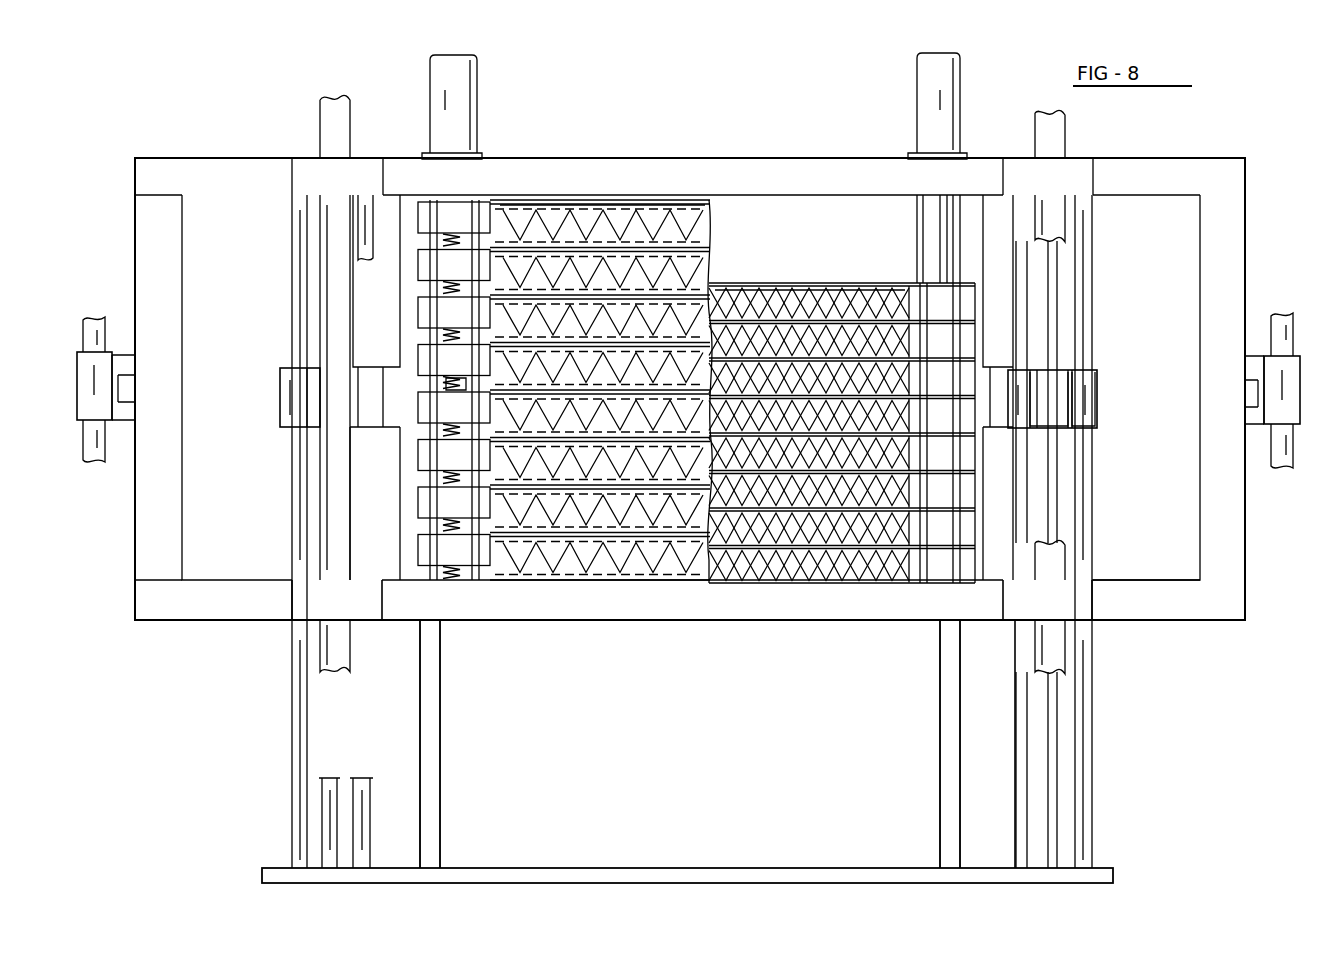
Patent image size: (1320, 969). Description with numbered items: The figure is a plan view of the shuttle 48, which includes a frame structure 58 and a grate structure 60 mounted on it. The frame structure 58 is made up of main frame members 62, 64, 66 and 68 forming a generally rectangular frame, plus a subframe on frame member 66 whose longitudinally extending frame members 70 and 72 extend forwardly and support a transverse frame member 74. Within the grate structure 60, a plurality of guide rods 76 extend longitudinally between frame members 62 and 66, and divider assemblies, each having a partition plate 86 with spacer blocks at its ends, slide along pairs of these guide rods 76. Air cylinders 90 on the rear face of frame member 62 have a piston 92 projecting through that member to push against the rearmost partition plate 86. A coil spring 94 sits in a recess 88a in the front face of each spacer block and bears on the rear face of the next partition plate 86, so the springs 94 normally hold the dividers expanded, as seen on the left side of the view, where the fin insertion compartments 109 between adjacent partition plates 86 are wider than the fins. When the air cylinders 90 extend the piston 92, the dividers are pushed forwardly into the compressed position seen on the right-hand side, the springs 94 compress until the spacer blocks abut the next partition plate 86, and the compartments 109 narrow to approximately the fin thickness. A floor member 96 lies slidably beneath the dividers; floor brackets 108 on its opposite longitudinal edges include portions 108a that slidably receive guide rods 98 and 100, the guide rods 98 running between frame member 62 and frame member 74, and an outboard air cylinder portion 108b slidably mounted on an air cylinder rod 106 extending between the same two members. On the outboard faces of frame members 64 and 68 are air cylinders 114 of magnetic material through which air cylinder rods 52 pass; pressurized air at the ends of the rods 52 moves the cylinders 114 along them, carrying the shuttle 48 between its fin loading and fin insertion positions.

The shuttle 48 is at (1258, 188).
The air cylinder rods 52 is at (112, 442).
The frame structure 58 is at (238, 158).
The grate structure 60 is at (690, 222).
The main frame member 62 is at (621, 158).
The main frame member 64 is at (137, 238).
The main frame member 66 is at (690, 622).
The main frame member 68 is at (1247, 590).
The longitudinally extending frame member 70 is at (442, 713).
The longitudinally extending frame member 72 is at (940, 738).
The transverse frame member 74 is at (660, 868).
The guide rods 76 is at (947, 218).
The partition plate 86 is at (773, 285).
The recess 88a is at (441, 378).
The air cylinders 90 is at (473, 113).
The piston 92 is at (927, 245).
The coil spring 94 is at (430, 283).
The floor member 96 is at (777, 225).
The guide rods 98 is at (371, 797).
The guide rods 100 is at (337, 786).
The air cylinder rods 106 is at (293, 275).
The floor brackets 108 is at (279, 401).
The portions 108a is at (1050, 378).
The outboard air cylinder portion 108b is at (1096, 420).
The fin insertion compartments 109 is at (600, 452).
The air cylinder 114 is at (113, 356).